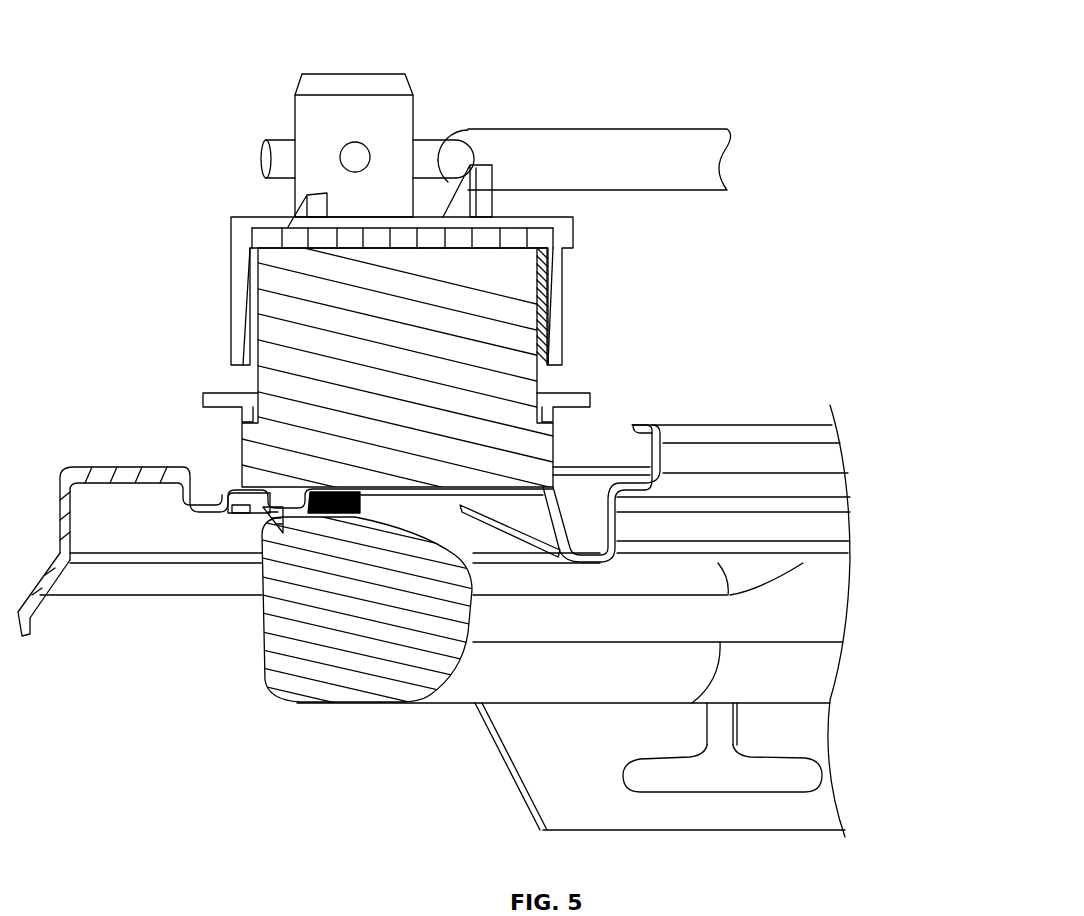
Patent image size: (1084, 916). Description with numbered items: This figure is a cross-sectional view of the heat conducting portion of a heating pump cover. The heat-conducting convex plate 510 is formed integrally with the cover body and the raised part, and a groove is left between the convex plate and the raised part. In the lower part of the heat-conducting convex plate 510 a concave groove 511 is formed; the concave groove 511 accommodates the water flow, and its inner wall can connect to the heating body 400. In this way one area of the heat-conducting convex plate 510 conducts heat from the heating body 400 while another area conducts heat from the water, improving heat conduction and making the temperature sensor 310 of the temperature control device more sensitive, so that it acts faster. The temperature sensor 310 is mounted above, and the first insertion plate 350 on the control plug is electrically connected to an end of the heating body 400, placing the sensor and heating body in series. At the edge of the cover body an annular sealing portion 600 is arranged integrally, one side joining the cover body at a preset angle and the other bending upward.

The first insertion plate 350 is at (312, 115).
The temperature sensor 310 is at (478, 347).
The sealing portion 600 is at (102, 467).
The heat-conducting convex plate 510 is at (235, 490).
The concave groove 511 is at (240, 506).
The heating body 400 is at (367, 673).